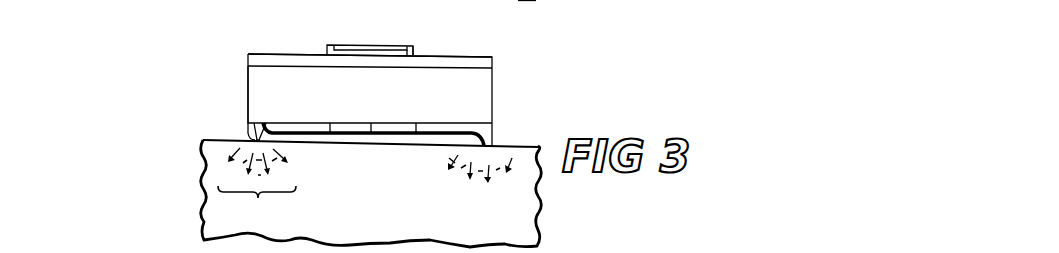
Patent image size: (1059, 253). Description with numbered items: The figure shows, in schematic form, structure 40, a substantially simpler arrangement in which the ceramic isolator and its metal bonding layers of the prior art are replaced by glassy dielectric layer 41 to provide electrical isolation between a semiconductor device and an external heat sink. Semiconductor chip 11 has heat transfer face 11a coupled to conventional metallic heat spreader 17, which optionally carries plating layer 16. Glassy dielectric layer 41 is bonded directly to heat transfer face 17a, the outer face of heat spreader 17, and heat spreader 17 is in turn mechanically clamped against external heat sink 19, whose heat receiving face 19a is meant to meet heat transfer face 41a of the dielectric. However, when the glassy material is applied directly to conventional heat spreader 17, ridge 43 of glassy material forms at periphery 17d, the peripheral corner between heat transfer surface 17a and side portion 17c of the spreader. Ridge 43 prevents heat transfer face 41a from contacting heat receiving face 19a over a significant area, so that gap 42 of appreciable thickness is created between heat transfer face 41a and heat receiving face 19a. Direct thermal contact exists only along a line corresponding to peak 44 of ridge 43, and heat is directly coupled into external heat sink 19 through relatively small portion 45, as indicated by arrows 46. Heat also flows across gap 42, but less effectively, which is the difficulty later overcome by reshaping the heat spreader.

The semiconductor chip 11 is at (329, 48).
The heat transfer face 11a is at (409, 50).
The plating layer 16 is at (257, 55).
The heat spreader 17 is at (482, 93).
The heat transfer face 17a is at (435, 122).
The side portion 17c is at (249, 74).
The periphery 17d is at (250, 120).
The external heat sink 19 is at (205, 167).
The heat receiving face 19a is at (400, 148).
The structure 40 is at (557, 83).
The glassy dielectric layer 41 is at (337, 128).
The heat transfer face 41a is at (372, 132).
The gap 42 is at (415, 130).
The ridge 43 is at (251, 135).
The peak 44 is at (259, 139).
The portion 45 is at (283, 149).
The arrows 46 is at (257, 204).